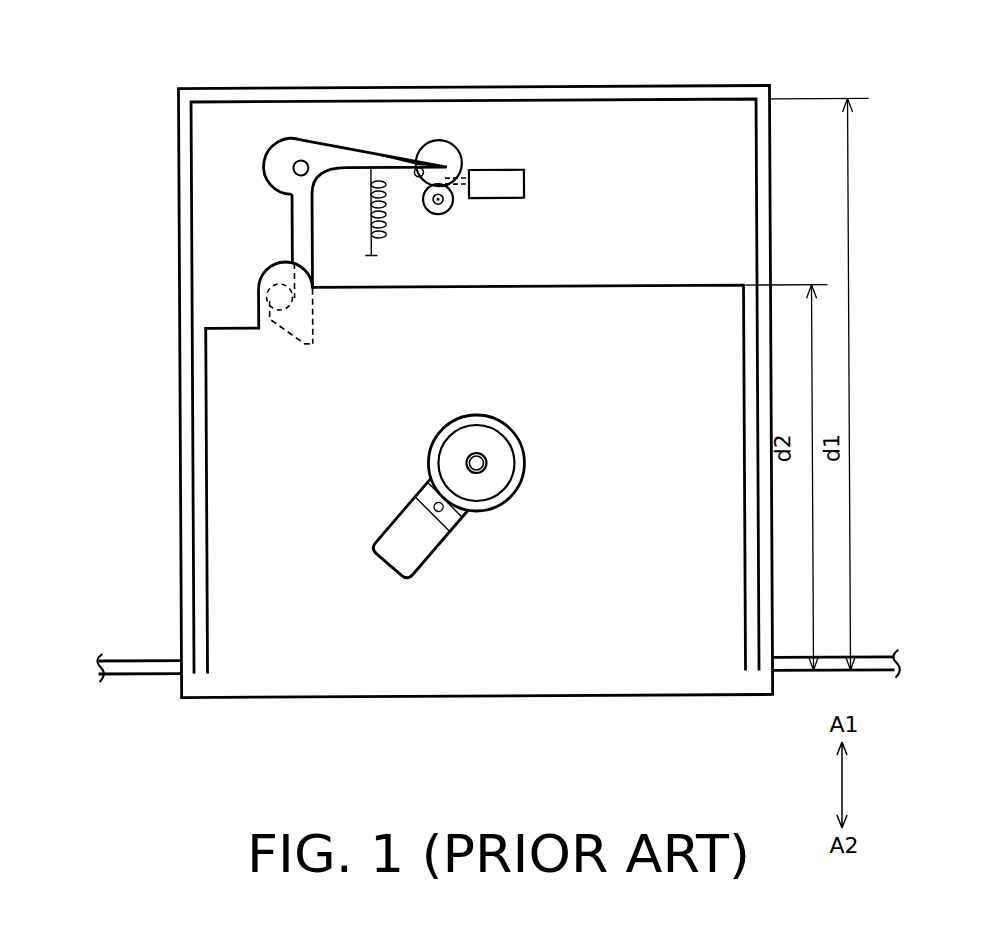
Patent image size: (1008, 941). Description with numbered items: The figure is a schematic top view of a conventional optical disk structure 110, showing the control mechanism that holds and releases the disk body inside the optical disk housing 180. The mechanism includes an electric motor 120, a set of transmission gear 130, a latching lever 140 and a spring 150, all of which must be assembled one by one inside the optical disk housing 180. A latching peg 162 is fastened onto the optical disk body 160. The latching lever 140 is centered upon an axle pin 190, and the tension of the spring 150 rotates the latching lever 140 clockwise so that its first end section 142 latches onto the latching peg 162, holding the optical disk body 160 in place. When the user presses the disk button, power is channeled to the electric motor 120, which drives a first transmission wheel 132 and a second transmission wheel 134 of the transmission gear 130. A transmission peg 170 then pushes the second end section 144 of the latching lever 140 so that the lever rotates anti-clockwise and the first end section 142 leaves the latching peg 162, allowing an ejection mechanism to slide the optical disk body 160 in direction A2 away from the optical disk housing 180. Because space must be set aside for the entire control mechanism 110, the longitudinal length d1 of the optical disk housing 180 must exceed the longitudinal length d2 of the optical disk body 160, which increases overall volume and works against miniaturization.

The optical disk structure 110 is at (238, 121).
The electric motor 120 is at (500, 170).
The set of transmission gear 130 is at (439, 140).
The first transmission wheel 132 is at (452, 210).
The second transmission wheel 134 is at (453, 143).
The latching lever 140 is at (300, 235).
The first end section 142 is at (290, 332).
The second end section 144 is at (372, 155).
The spring 150 is at (384, 214).
The optical disk body 160 is at (600, 310).
The latching peg 162 is at (266, 292).
The transmission peg 170 is at (418, 157).
The optical disk housing 180 is at (656, 87).
The axle pin 190 is at (294, 167).